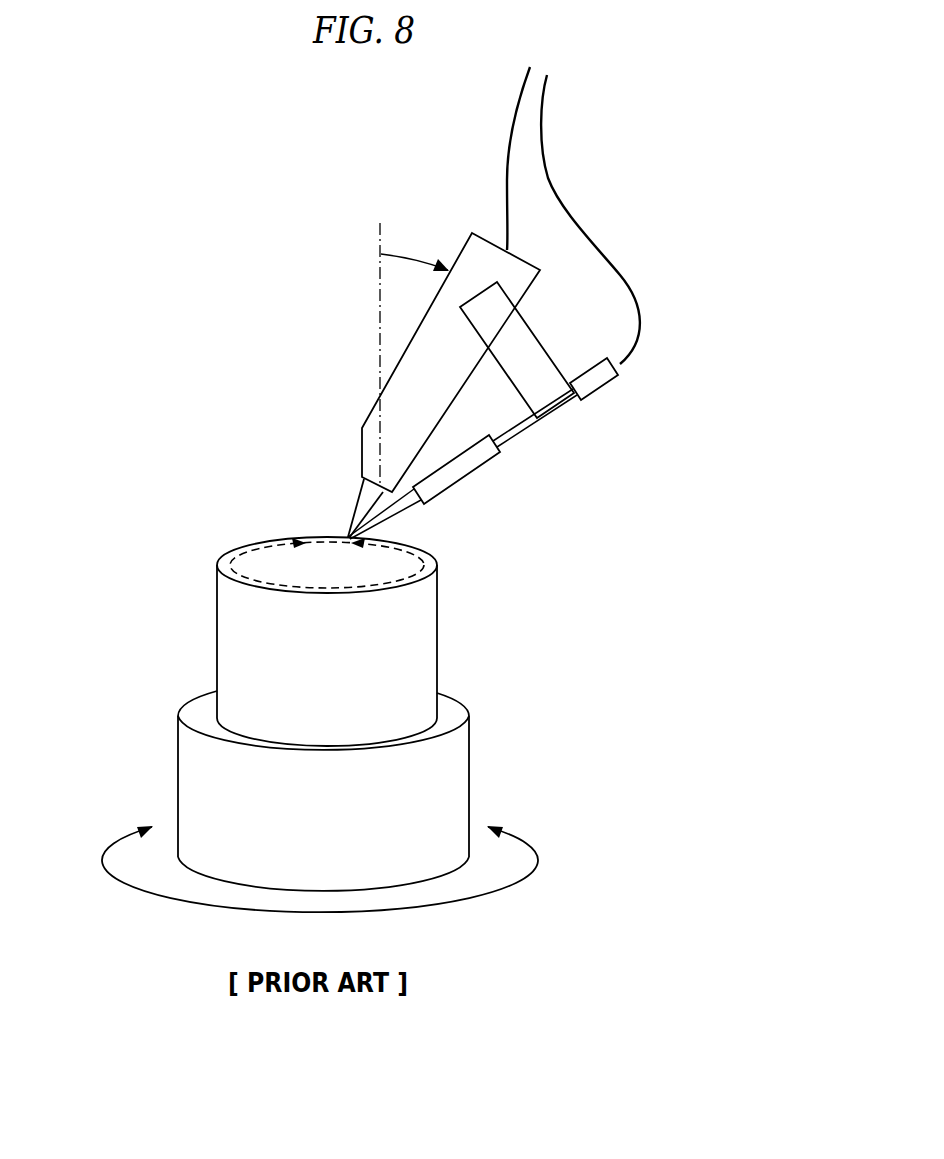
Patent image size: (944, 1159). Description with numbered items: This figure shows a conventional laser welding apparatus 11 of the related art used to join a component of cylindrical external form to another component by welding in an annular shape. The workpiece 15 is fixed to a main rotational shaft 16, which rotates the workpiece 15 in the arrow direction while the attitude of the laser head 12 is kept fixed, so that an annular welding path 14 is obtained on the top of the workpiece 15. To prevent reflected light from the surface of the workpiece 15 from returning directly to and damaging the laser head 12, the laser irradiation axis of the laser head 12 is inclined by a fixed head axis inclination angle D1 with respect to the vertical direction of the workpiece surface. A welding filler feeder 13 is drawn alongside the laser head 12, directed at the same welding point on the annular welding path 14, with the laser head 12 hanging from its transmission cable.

The laser welding apparatus 11 is at (347, 335).
The laser head 12 is at (368, 439).
The filler wire feeder 13 is at (465, 472).
The head axis inclination angle D1 is at (417, 253).
The annular welding path 14 is at (433, 560).
The workpiece 15 is at (222, 635).
The main rotational shaft 16 is at (460, 764).